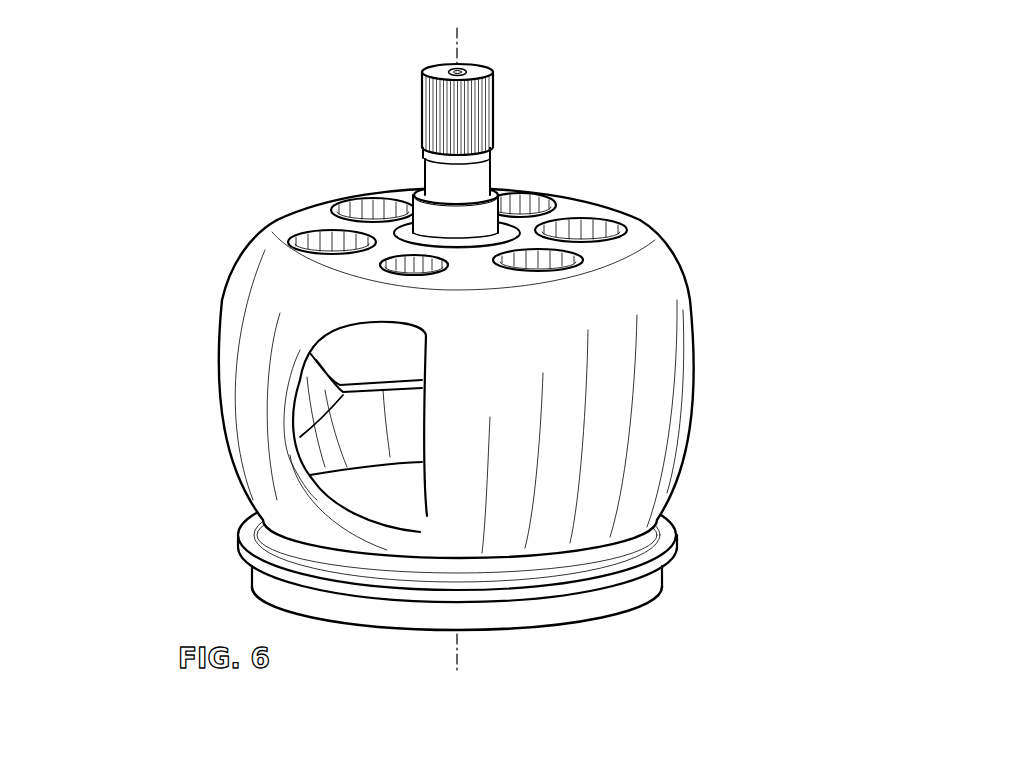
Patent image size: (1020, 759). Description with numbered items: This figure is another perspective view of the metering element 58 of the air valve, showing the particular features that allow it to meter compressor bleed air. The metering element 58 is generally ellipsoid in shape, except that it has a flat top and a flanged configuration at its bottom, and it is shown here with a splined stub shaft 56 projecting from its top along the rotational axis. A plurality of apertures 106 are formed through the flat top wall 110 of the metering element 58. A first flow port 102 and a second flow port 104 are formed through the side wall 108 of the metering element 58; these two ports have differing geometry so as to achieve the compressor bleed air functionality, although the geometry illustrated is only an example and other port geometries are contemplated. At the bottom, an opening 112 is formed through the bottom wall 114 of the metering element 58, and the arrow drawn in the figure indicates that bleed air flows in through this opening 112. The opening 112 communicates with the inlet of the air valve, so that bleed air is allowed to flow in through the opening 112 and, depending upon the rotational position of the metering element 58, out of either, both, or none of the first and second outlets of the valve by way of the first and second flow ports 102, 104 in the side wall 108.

The metering element 58 is at (438, 367).
The splined shaft 56 is at (423, 85).
The apertures 106 is at (360, 197).
The top wall 110 is at (577, 207).
The second flow port 104 is at (293, 382).
The first flow port 102 is at (297, 442).
The opening 112 is at (396, 508).
The side wall 108 is at (672, 490).
The bottom wall 114 is at (620, 618).